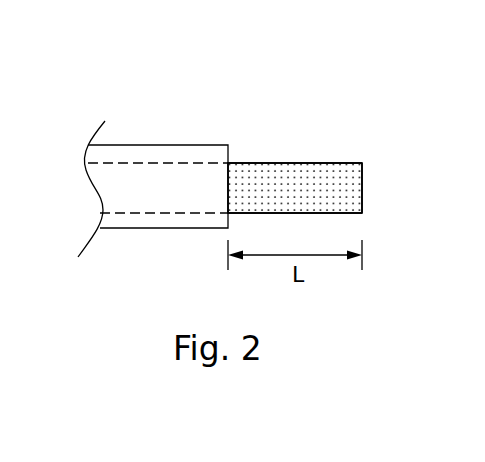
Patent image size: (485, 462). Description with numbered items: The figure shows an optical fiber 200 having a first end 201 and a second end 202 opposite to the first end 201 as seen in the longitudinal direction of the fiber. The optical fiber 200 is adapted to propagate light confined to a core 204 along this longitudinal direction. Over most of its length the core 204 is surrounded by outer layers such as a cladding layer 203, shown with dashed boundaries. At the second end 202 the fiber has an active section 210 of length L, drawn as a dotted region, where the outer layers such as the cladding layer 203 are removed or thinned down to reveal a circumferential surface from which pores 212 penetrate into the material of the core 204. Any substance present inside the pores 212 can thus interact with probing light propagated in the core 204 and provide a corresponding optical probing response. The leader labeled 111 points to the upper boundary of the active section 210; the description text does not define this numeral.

The optical fiber 200 is at (121, 65).
The first end 201 is at (66, 189).
The second end 202 is at (395, 188).
The cladding layer 203 is at (138, 230).
The core 204 is at (247, 183).
The active section 210 is at (275, 182).
The fiber coating 111 is at (288, 163).
The pores 212 is at (325, 177).